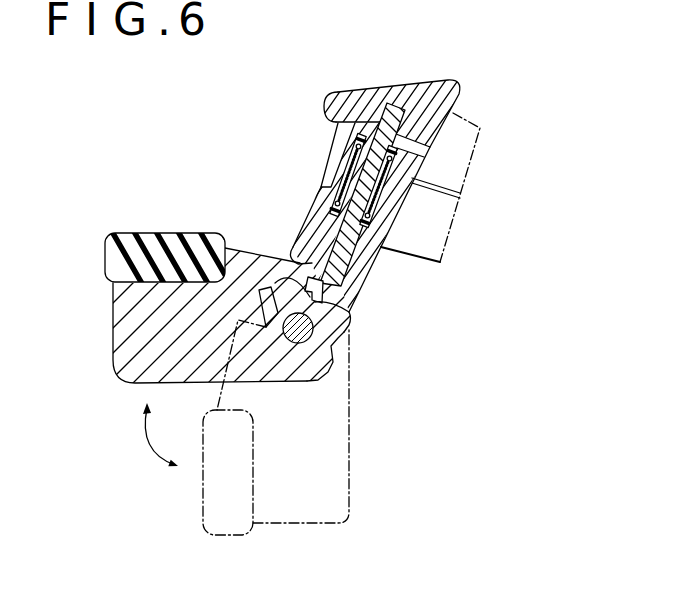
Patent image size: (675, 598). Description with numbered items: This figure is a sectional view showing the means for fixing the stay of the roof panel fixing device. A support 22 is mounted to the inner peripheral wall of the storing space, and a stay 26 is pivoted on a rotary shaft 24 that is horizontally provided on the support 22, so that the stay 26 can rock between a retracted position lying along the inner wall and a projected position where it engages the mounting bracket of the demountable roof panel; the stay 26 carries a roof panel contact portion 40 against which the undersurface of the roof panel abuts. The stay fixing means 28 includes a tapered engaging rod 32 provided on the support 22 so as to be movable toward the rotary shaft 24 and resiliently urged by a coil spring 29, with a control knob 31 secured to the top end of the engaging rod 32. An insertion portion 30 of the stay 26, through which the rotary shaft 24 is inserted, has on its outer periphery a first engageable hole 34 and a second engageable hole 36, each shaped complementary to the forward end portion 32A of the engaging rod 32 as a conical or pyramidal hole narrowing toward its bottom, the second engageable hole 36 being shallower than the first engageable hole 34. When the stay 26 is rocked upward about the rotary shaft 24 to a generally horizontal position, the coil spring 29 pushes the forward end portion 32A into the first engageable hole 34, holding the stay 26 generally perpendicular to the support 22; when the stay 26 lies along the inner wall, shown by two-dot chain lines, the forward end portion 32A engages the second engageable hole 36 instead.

The support 22 is at (380, 258).
The rotary shaft 24 is at (303, 344).
The stay 26 is at (106, 316).
The stay fixing means 28 is at (400, 74).
The coil spring 29 is at (356, 150).
The insertion portion 30 is at (351, 322).
The control knob 31 is at (338, 96).
The engaging rod 32 is at (333, 220).
The forward end portion 32A is at (300, 260).
The first engageable hole 34 is at (350, 311).
The second engageable hole 36 is at (333, 354).
The roof panel contact portion 40 is at (140, 235).